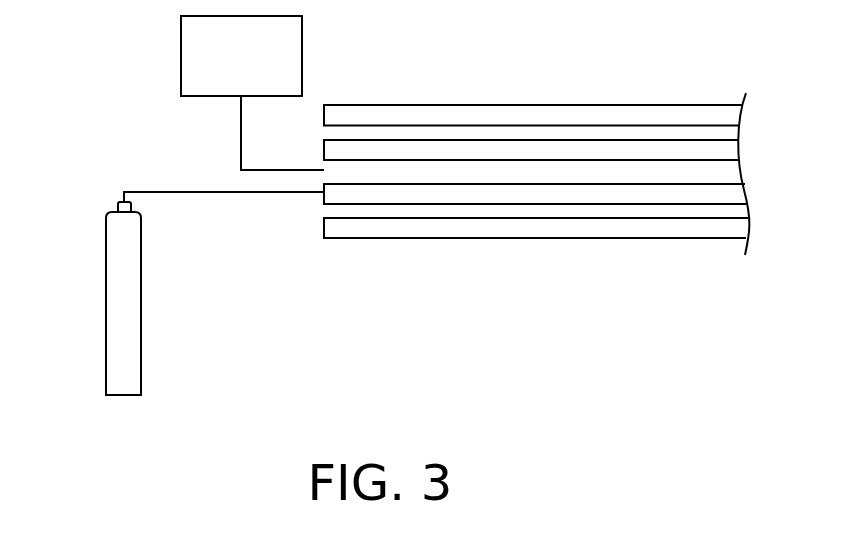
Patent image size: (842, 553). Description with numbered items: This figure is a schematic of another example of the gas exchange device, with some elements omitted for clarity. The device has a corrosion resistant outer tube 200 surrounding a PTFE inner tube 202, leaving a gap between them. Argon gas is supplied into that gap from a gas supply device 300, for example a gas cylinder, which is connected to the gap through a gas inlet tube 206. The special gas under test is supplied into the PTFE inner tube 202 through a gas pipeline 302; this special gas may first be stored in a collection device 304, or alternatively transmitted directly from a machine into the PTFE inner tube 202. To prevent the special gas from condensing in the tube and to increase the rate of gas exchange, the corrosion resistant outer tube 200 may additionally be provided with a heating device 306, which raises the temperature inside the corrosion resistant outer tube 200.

The corrosion resistant outer tube 200 is at (482, 140).
The PTFE inner tube 202 is at (477, 185).
The gas inlet tube 206 is at (222, 194).
The gas supply device 300 is at (106, 303).
The gas pipeline 302 is at (240, 133).
The collection device 304 is at (181, 57).
The heating device 306 is at (563, 105).